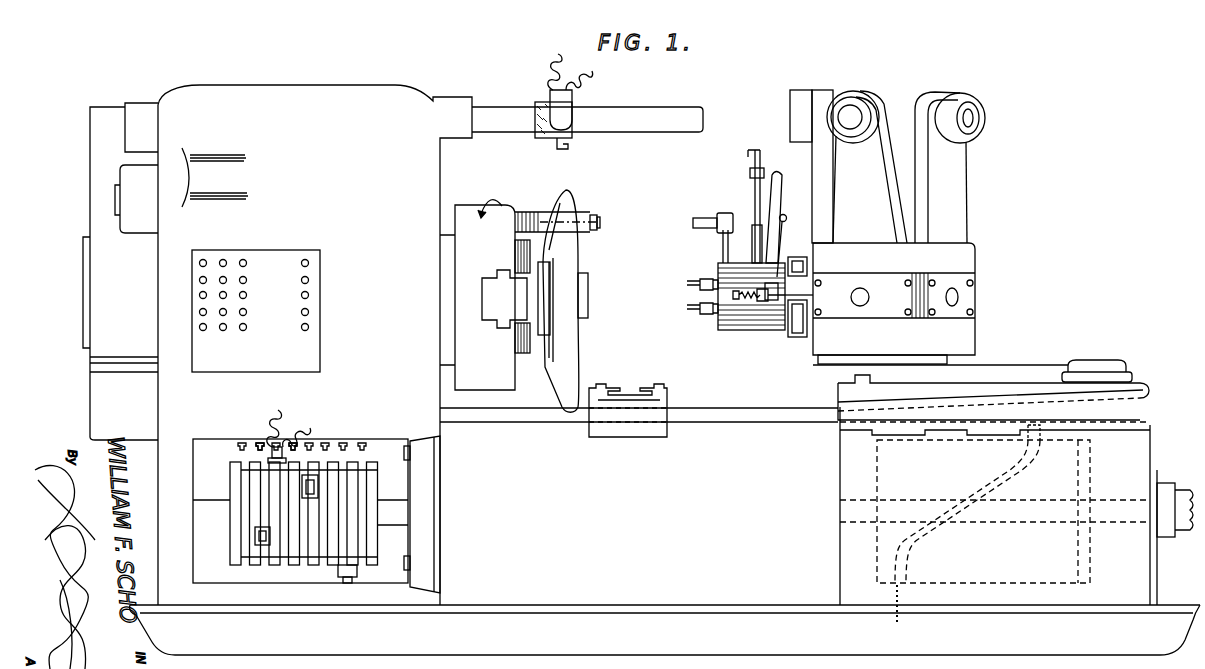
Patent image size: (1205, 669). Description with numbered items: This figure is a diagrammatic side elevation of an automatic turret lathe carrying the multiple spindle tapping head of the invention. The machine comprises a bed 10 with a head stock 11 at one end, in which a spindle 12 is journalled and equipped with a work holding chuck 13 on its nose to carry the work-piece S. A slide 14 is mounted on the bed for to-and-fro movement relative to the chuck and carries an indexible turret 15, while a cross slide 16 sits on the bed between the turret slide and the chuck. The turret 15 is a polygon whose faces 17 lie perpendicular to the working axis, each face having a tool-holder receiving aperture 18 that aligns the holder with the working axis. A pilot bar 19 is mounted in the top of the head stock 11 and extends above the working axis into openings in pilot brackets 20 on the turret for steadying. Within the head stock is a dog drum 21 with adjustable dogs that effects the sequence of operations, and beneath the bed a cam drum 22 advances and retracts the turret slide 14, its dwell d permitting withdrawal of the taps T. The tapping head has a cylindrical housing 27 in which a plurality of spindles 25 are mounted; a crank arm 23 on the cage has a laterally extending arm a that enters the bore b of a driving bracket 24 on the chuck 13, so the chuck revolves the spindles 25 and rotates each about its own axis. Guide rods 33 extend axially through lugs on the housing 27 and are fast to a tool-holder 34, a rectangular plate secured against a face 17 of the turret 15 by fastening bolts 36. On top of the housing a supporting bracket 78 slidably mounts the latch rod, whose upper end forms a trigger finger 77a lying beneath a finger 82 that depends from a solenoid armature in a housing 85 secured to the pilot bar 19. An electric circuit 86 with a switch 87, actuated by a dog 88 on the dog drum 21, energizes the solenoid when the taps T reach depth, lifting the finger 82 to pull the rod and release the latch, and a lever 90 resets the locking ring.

The bed 10 is at (752, 430).
The head stock 11 is at (302, 92).
The spindle 12 is at (448, 235).
The work holding chuck 13 is at (505, 382).
The slide 14 is at (1010, 367).
The turret 15 is at (975, 320).
The cross slide 16 is at (620, 392).
The faces 17 is at (898, 318).
The tool-holder receiving aperture 18 is at (868, 298).
The pilot bar 19 is at (507, 112).
The pilot brackets 20 is at (828, 198).
The dog drum 21 is at (290, 550).
The cam drum 22 is at (870, 500).
The crank arm 23 is at (723, 239).
The driving bracket 24 is at (537, 216).
The spindles 25 is at (712, 281).
The housing 27 is at (755, 331).
The guide rods 33 is at (812, 295).
The tool-holder 34 is at (808, 268).
The fastening bolts 36 is at (819, 316).
The trigger finger 77a is at (752, 148).
The supporting bracket 78 is at (770, 180).
The finger 82 is at (556, 150).
The housing 85 is at (563, 108).
The electric circuit 86 is at (310, 414).
The switch 87 is at (297, 441).
The dog 88 is at (262, 441).
The lever 90 is at (784, 214).
The work-piece S is at (573, 360).
The taps T is at (694, 308).
The arm a is at (699, 216).
The bore b is at (592, 214).
The dwell d is at (892, 613).